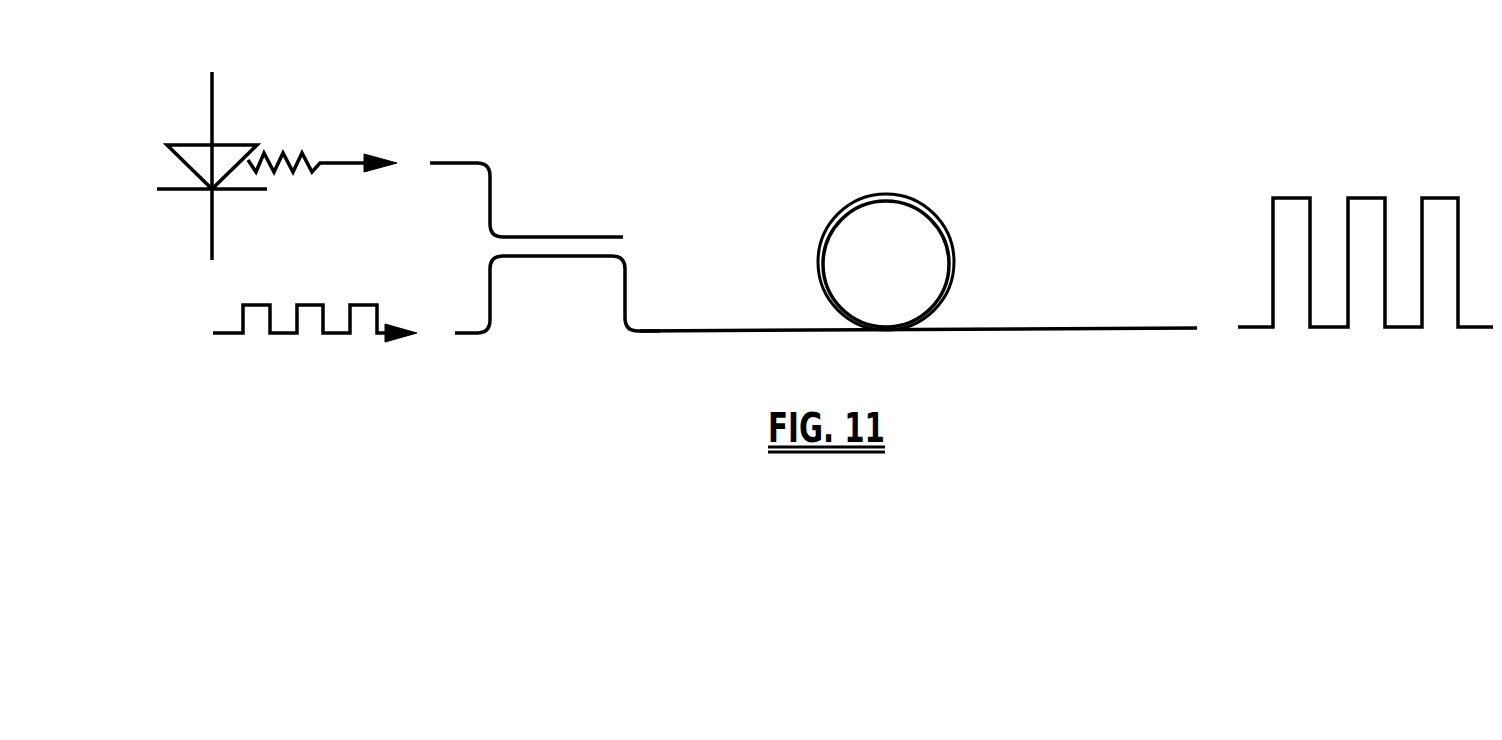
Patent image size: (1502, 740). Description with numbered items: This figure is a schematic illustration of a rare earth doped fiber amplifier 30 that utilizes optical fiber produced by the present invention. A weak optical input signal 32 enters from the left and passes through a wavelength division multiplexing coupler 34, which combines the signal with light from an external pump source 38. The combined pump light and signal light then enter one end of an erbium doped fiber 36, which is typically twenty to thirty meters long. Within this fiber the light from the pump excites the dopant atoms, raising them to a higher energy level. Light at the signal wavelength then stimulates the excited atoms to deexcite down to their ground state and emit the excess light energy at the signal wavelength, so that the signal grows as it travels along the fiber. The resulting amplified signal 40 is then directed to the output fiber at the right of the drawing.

The rare earth doped fiber amplifier 30 is at (802, 140).
The weak optical input signal 32 is at (282, 335).
The wavelength division multiplexing coupler 34 is at (540, 237).
The erbium doped fiber 36 is at (902, 200).
The external pump source 38 is at (228, 142).
The amplified signal 40 is at (1327, 329).